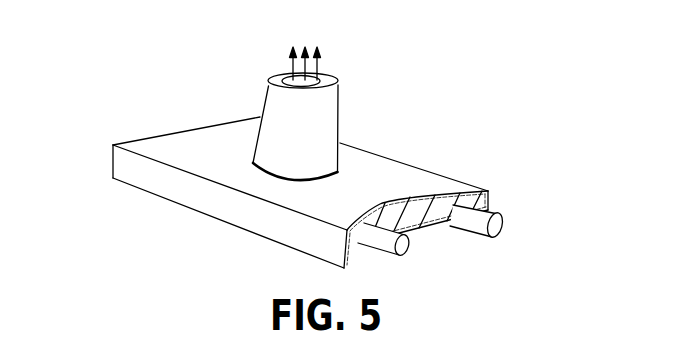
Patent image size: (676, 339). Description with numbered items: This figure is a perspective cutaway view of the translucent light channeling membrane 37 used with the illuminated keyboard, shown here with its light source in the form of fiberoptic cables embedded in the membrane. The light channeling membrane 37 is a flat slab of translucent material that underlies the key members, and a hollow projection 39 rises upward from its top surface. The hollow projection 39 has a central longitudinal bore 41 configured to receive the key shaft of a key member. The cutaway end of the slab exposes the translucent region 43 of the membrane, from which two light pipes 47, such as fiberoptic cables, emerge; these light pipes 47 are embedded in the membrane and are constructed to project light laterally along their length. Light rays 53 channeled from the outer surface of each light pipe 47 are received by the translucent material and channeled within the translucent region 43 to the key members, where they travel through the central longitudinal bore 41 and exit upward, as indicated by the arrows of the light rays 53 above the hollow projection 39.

The light channeling membrane 37 is at (438, 178).
The hollow projection 39 is at (340, 120).
The central longitudinal bore 41 is at (318, 78).
The translucent region 43 is at (426, 214).
The light pipe 47 is at (494, 213).
The light rays 53 is at (293, 50).